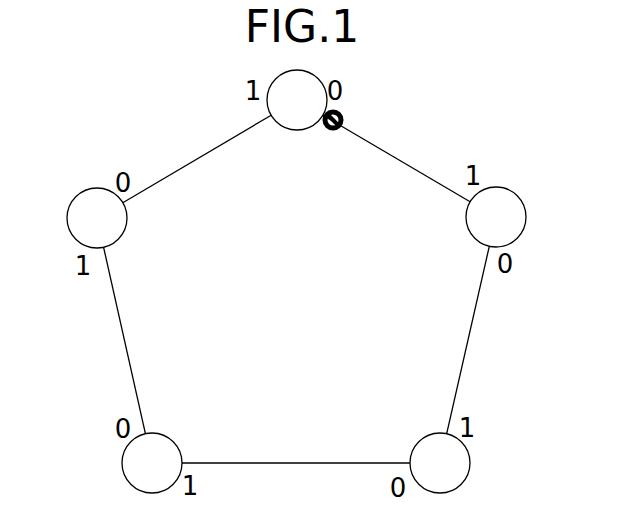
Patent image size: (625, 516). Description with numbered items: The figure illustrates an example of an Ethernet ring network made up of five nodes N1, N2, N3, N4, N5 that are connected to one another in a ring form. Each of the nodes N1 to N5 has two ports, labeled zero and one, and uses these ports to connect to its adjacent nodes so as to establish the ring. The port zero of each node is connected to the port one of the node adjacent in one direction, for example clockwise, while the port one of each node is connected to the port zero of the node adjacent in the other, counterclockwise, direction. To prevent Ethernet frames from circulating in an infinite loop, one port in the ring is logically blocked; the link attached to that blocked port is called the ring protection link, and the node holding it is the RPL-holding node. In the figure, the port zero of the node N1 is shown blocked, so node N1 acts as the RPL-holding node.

The node N1 is at (281, 114).
The node N2 is at (480, 231).
The node N3 is at (424, 477).
The node N4 is at (136, 477).
The node N5 is at (81, 232).